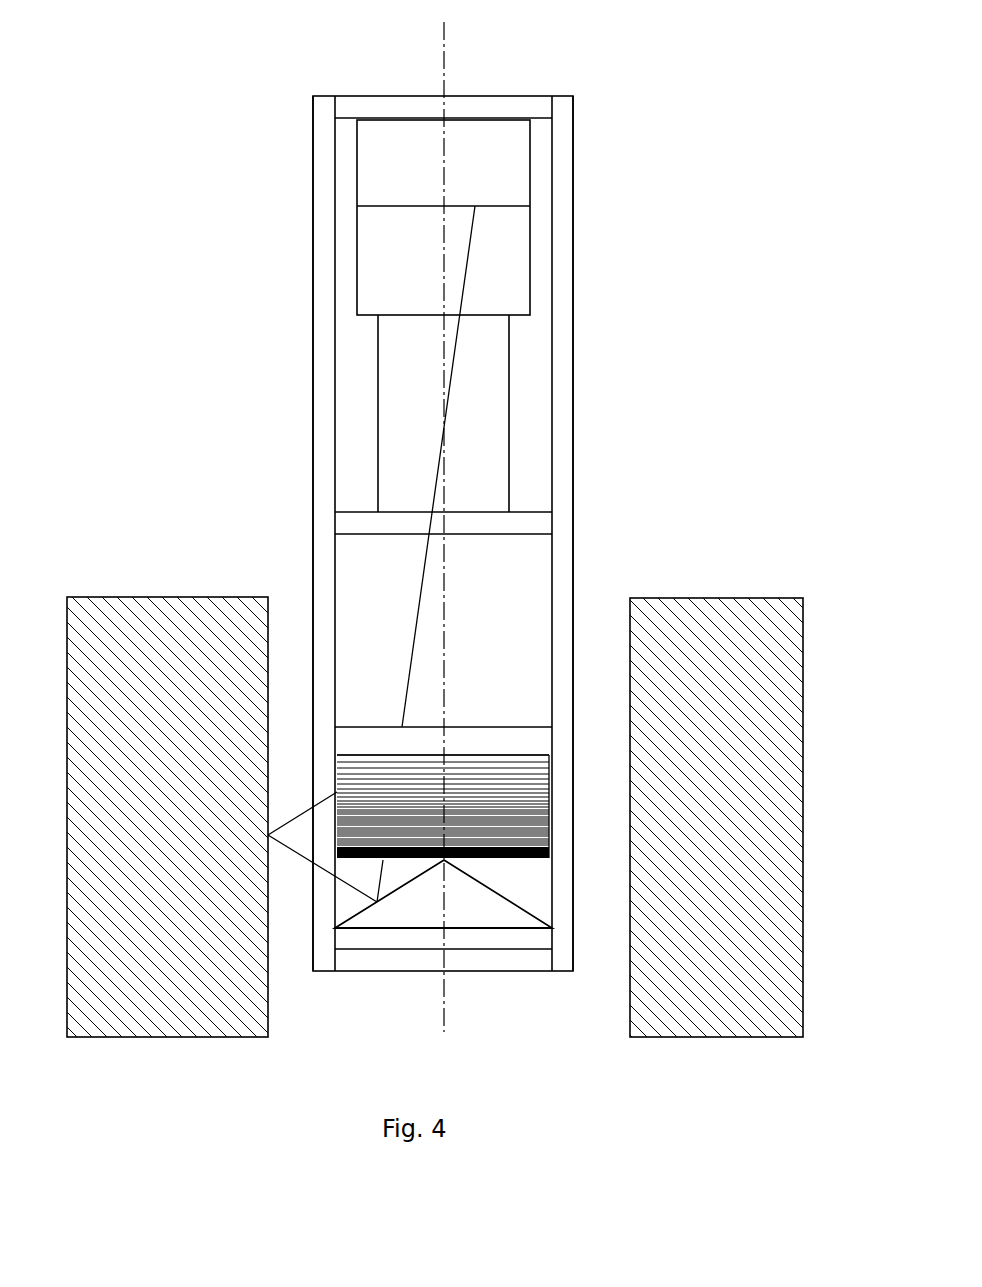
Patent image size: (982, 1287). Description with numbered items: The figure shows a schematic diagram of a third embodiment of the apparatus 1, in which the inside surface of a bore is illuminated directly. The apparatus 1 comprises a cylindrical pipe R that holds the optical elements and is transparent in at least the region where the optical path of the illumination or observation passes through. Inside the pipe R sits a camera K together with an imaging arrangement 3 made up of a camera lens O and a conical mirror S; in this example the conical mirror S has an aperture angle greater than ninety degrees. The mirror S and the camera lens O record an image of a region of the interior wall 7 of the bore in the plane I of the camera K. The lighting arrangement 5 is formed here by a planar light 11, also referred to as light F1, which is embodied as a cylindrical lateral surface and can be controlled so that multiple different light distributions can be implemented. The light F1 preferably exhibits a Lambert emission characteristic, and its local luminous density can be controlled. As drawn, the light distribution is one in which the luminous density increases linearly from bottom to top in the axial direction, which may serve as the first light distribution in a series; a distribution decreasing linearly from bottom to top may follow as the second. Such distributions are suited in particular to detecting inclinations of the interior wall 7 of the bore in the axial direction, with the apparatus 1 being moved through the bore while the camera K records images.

The apparatus 1 is at (596, 83).
The imaging arrangement 3 is at (595, 332).
The lighting arrangement 5 is at (555, 795).
The interior wall 7 is at (614, 617).
The planar light 11 is at (551, 810).
The plane of the camera I is at (507, 205).
The camera K is at (530, 257).
The camera lens O is at (509, 413).
The cylindrical pipe R is at (313, 312).
The light F1 is at (552, 750).
The conical mirror S is at (505, 900).